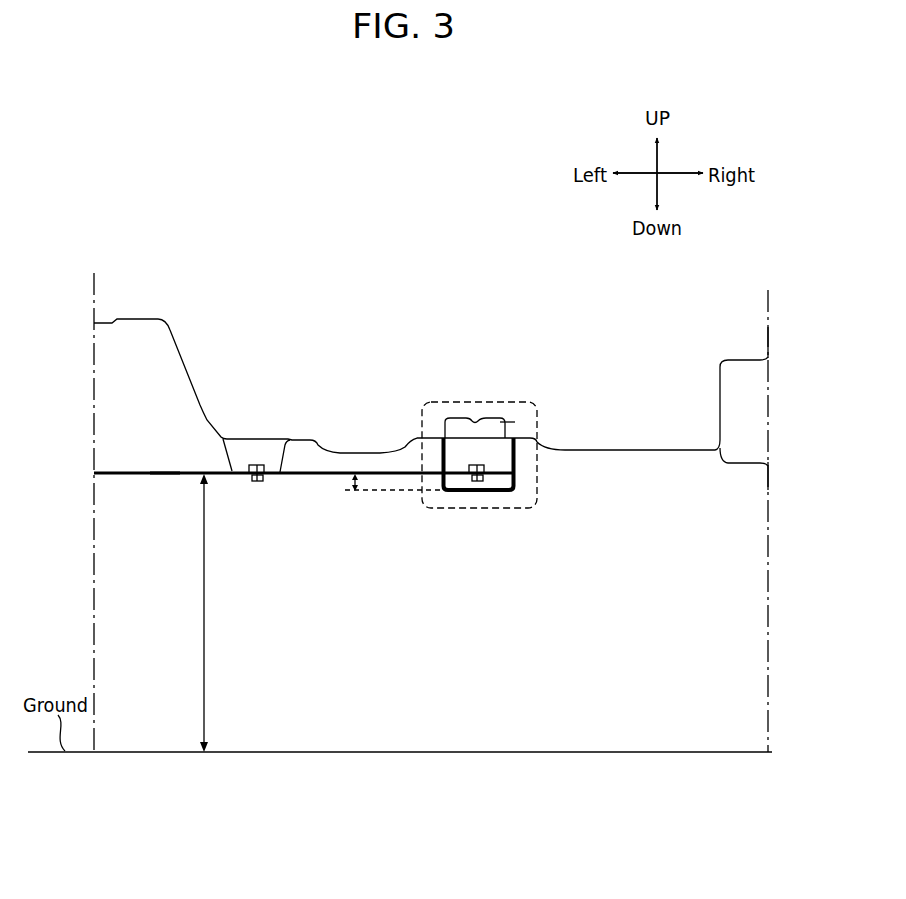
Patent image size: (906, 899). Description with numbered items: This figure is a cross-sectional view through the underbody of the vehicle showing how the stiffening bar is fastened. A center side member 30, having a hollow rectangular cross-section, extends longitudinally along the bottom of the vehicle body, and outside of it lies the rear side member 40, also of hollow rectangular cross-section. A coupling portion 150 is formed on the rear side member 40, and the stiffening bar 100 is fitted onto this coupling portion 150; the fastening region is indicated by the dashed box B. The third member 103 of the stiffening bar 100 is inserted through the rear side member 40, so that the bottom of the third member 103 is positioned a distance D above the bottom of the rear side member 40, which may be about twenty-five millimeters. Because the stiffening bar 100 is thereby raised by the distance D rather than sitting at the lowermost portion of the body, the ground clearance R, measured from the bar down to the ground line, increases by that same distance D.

The center side member 30 is at (220, 448).
The stiffening bar 100 is at (141, 469).
The third member 103 is at (163, 477).
The rear side member 40 is at (498, 492).
The coupling portion 150 is at (522, 461).
The mounting region B is at (496, 394).
The distance D is at (345, 484).
The ground clearance R is at (205, 642).